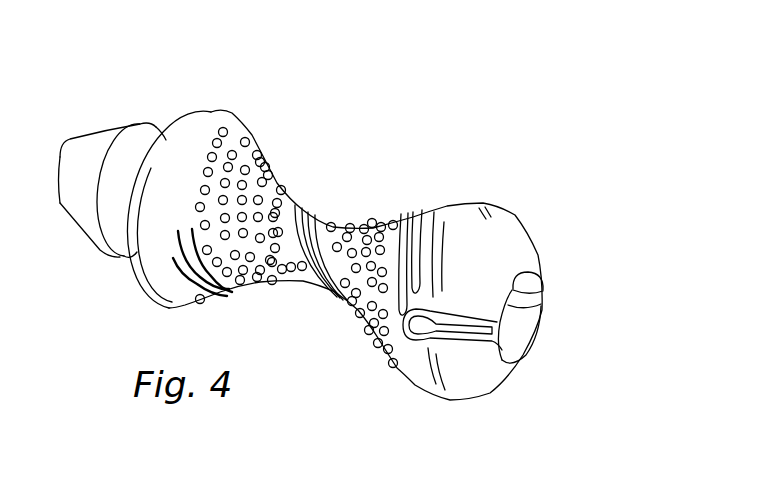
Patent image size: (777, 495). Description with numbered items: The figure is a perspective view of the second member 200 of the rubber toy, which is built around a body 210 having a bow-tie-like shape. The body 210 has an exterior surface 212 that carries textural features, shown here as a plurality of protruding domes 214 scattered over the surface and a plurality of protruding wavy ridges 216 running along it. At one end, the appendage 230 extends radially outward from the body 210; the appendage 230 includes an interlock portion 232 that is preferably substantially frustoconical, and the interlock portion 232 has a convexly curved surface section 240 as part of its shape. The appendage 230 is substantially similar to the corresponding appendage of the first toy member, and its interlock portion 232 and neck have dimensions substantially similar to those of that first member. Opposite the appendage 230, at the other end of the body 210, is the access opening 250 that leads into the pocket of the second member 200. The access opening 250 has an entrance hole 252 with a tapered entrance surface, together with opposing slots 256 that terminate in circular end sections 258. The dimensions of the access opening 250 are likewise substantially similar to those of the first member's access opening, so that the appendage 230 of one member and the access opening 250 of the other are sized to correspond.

The second member 200 is at (470, 169).
The body 210 is at (302, 283).
The exterior surface 212 is at (293, 201).
The protruding domes 214 is at (368, 229).
The protruding wavy ridges 216 is at (296, 208).
The appendage 230 is at (93, 135).
The interlock portion 232 is at (63, 208).
The convexly curved surface section 240 is at (143, 147).
The access opening 250 is at (544, 328).
The entrance hole 252 is at (547, 287).
The opposing slots 256 is at (473, 334).
The circular end sections 258 is at (420, 333).